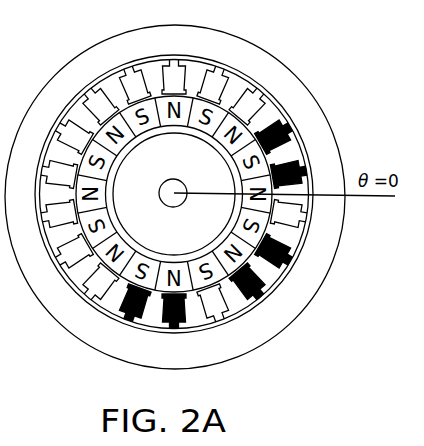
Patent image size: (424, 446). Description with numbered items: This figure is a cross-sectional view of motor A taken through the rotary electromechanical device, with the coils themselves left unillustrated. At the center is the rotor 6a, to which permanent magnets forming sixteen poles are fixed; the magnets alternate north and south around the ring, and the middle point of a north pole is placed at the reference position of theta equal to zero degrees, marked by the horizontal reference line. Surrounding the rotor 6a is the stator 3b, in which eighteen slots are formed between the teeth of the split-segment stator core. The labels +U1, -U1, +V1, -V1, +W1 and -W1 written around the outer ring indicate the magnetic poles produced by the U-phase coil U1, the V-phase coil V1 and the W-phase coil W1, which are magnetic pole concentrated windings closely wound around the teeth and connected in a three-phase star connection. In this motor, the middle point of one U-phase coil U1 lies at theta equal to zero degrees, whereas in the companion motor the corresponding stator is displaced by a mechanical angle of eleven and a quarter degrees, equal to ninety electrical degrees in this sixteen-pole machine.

The stator 3b is at (245, 87).
The rotor 6a is at (247, 283).
The U-phase coil U1 is at (174, 194).
The V-phase coil V1 is at (174, 194).
The W-phase coil W1 is at (174, 194).